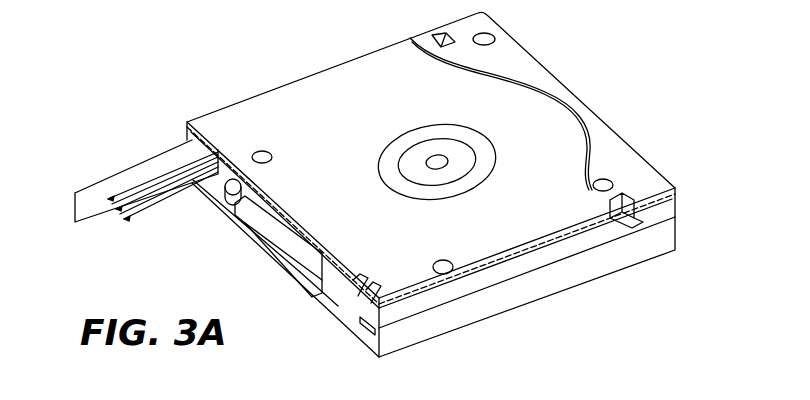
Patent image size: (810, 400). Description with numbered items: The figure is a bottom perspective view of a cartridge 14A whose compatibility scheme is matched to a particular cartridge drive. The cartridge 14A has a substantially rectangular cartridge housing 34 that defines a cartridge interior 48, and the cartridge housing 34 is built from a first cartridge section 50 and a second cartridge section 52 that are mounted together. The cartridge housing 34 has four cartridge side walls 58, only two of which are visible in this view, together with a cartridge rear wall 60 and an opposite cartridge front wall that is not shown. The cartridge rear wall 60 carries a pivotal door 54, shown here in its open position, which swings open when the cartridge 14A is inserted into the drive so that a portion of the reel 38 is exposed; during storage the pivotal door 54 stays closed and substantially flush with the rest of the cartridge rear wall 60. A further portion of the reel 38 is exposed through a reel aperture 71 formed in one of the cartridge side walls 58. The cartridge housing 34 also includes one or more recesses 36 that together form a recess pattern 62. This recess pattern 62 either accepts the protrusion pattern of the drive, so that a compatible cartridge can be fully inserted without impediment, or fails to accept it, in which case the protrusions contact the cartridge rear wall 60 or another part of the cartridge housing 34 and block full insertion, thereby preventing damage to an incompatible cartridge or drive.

The cartridge 14A is at (561, 312).
The cartridge housing 34 is at (377, 72).
The reel 38 is at (456, 156).
The reel aperture 71 is at (478, 176).
The pivotal door 54 is at (84, 192).
The cartridge interior 48 is at (232, 223).
The cartridge rear wall 60 is at (328, 296).
The recesses 36 is at (358, 284).
The recess pattern 62 is at (332, 382).
The first cartridge section 50 is at (480, 308).
The second cartridge section 52 is at (430, 302).
The cartridge side walls 58 is at (562, 209).